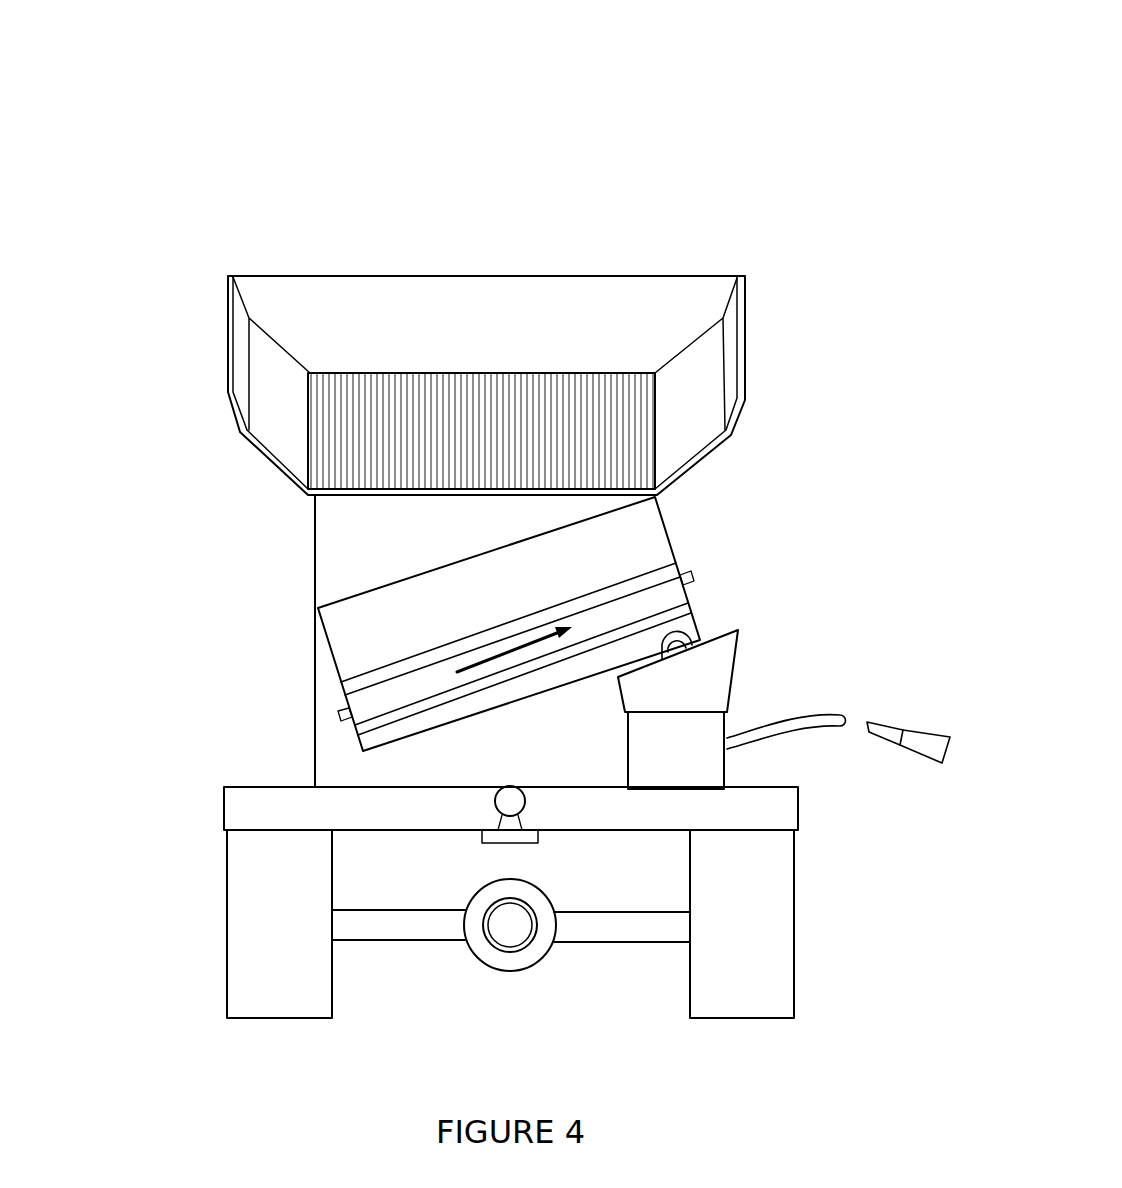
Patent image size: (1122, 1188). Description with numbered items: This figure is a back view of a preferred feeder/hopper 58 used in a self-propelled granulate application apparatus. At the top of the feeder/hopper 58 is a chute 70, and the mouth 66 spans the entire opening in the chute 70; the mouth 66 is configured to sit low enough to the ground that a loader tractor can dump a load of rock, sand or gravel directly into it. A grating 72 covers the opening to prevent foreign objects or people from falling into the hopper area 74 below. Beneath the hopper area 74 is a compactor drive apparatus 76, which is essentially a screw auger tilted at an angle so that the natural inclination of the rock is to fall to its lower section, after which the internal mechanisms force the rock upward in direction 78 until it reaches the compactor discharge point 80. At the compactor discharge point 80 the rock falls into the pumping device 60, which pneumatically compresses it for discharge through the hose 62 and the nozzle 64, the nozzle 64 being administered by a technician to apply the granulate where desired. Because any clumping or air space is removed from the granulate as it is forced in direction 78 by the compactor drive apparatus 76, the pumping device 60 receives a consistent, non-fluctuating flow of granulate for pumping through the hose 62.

The feeder/hopper 58 is at (748, 140).
The pumping device 60 is at (727, 763).
The hose 62 is at (768, 718).
The nozzle 64 is at (920, 757).
The mouth 66 is at (738, 277).
The chute 70 is at (296, 285).
The grating 72 is at (657, 458).
The hopper area 74 is at (633, 540).
The compactor drive apparatus 76 is at (427, 735).
The direction 78 is at (503, 653).
The compactor discharge point 80 is at (700, 630).